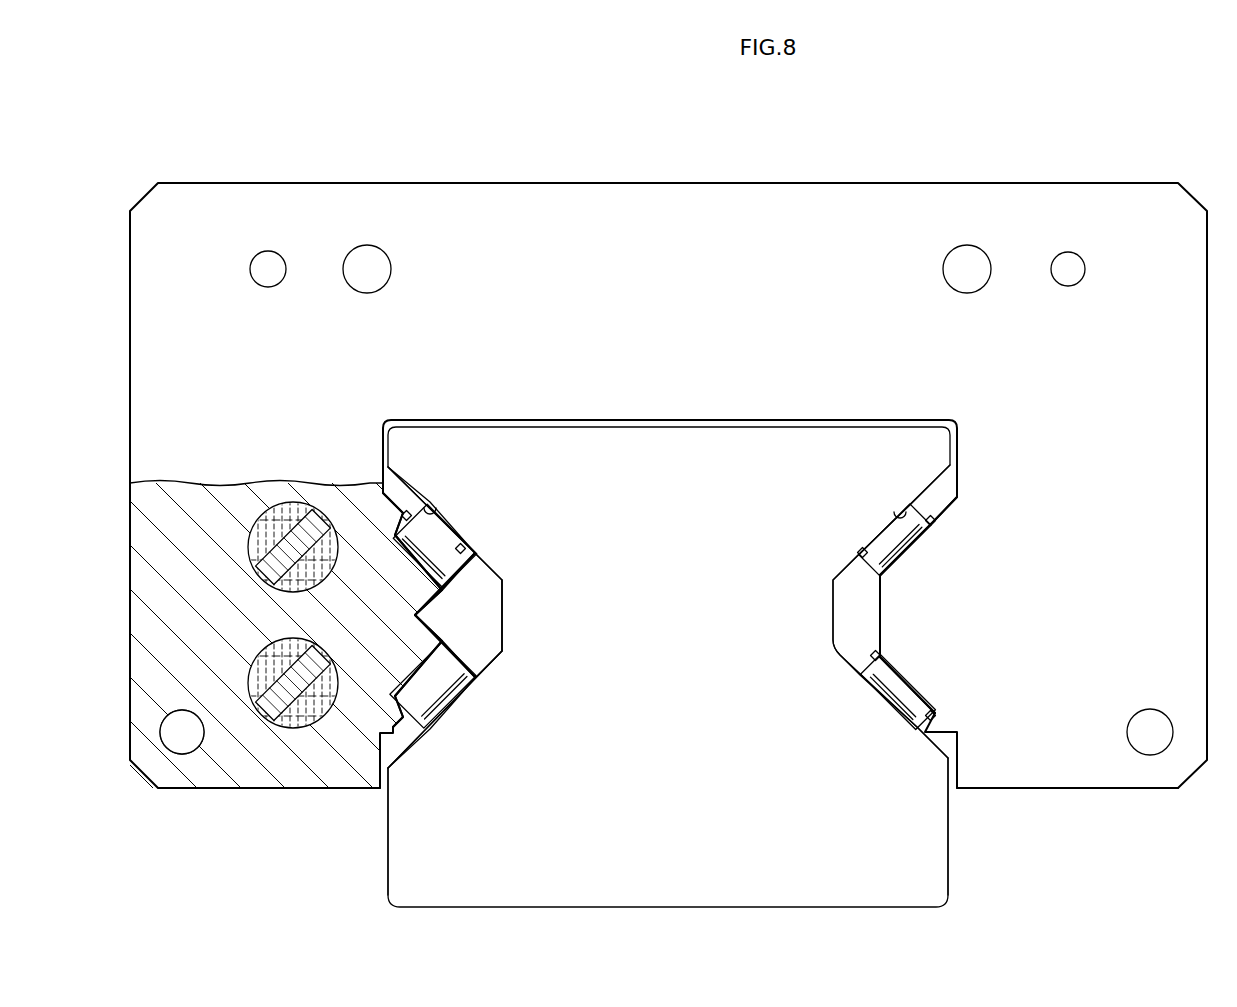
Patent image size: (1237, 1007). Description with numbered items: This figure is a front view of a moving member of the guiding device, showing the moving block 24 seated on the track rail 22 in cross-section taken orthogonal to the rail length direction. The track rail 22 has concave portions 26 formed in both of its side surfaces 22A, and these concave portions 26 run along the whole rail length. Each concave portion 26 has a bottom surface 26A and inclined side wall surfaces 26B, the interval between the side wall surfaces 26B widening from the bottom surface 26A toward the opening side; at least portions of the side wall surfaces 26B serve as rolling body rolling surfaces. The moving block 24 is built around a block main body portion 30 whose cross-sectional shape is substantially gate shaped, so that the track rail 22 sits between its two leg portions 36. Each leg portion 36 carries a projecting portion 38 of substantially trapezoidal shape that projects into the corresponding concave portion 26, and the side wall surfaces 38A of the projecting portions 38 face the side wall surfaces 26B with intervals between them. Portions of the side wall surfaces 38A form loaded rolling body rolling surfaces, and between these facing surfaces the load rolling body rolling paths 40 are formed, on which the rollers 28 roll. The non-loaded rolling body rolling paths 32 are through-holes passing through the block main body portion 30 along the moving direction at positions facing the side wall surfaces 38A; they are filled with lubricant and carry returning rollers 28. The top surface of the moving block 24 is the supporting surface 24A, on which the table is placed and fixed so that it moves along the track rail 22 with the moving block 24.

The track rail 22 is at (828, 906).
The side surface 22A is at (386, 822).
The moving block 24 is at (652, 168).
The supporting surface 24A is at (521, 181).
The concave portion 26 is at (503, 597).
The bottom surface 26A is at (504, 628).
The side wall surface 26B is at (462, 535).
The roller 28 is at (425, 556).
The block main body portion 30 is at (888, 181).
The non-loaded rolling body rolling path 32 is at (272, 504).
The leg portion 36 is at (238, 790).
The projecting portion 38 is at (456, 640).
The side wall surface 38A is at (505, 570).
The load rolling body rolling path 40 is at (430, 506).